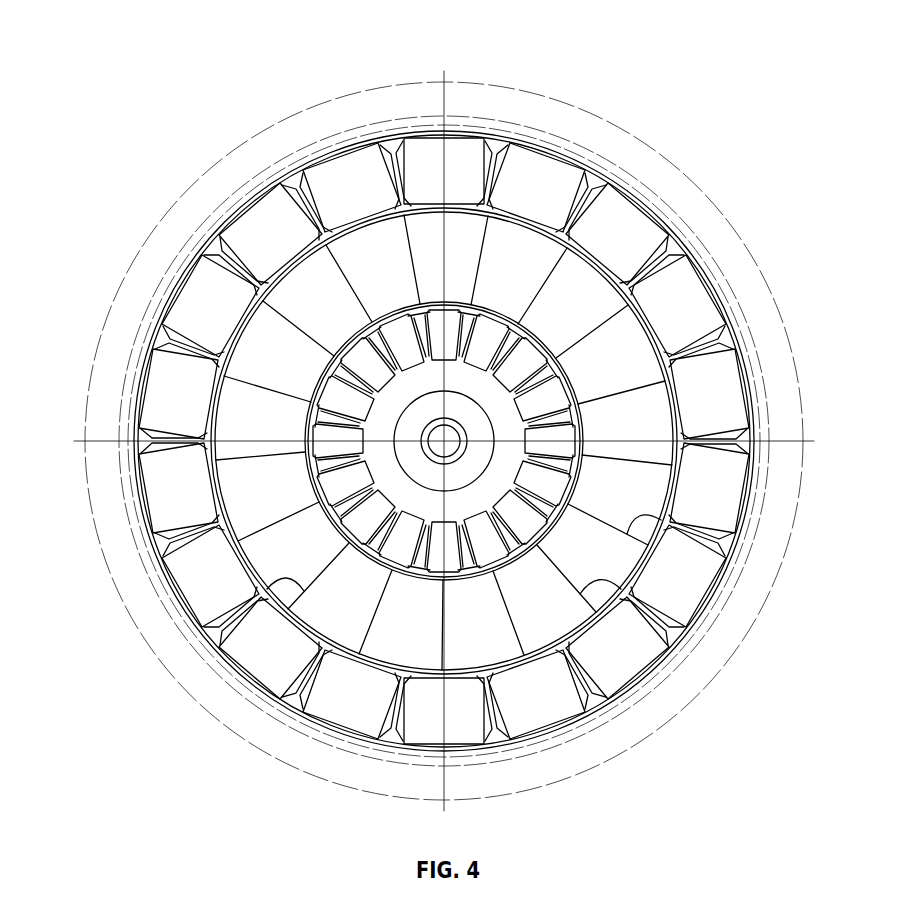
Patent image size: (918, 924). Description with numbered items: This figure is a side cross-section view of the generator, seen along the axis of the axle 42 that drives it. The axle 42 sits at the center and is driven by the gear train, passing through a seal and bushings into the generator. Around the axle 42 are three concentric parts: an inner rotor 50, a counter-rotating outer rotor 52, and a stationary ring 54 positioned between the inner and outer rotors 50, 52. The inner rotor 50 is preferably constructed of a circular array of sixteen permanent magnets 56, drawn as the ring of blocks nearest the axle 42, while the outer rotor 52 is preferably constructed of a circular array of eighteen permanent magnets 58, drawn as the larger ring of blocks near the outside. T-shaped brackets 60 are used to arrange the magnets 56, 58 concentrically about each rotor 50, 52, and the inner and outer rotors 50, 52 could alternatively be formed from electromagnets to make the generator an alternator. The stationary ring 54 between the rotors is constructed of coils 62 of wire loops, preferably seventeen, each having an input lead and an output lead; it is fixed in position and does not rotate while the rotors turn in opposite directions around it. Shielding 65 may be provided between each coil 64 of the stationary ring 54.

The axle 42 is at (433, 427).
The inner rotor 50 is at (555, 147).
The counter-rotating outer rotor 52 is at (553, 397).
The stationary ring 54 is at (590, 283).
The permanent magnets 56 is at (350, 444).
The permanent magnets 58 is at (172, 385).
The T-shaped brackets 60 is at (257, 597).
The coils 62 is at (385, 635).
The coil 64 is at (260, 600).
The shielding 65 is at (625, 590).